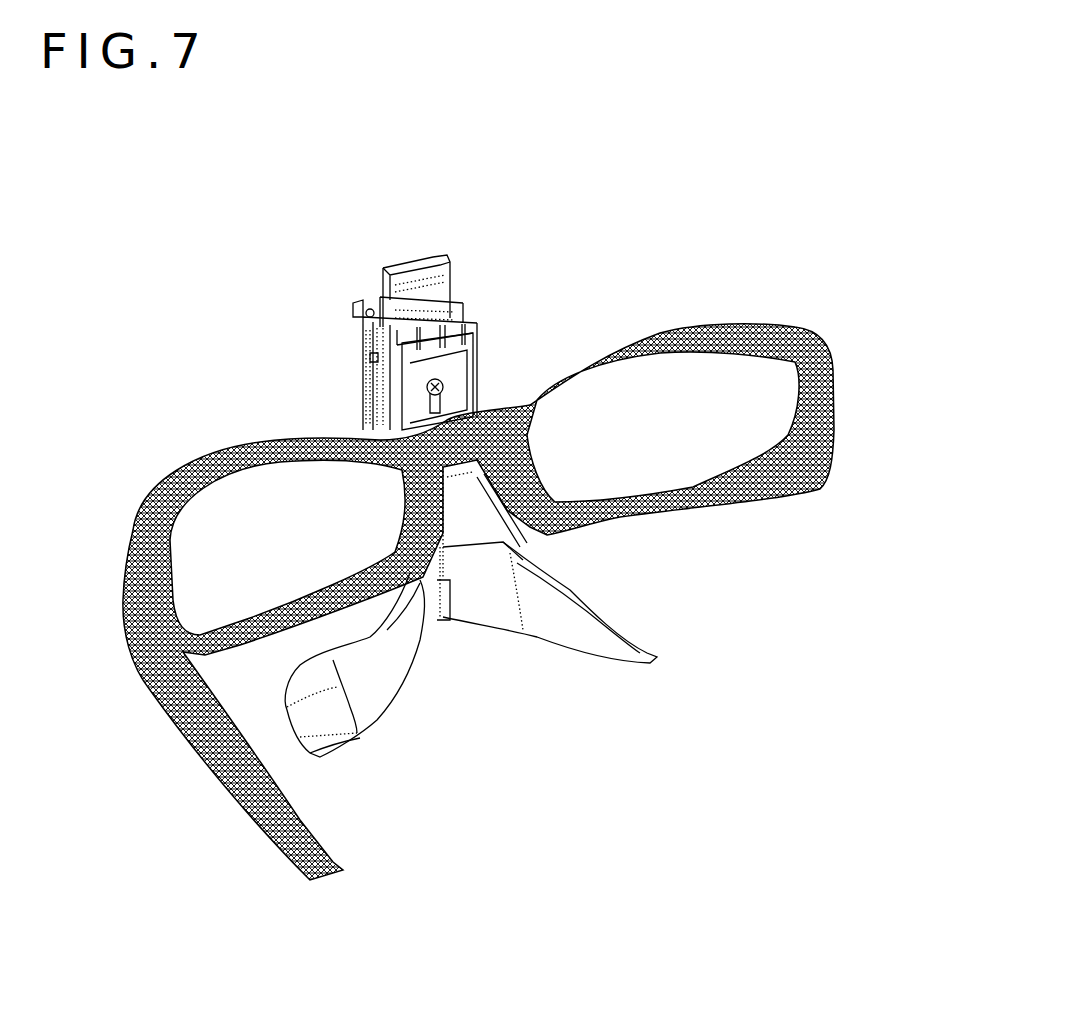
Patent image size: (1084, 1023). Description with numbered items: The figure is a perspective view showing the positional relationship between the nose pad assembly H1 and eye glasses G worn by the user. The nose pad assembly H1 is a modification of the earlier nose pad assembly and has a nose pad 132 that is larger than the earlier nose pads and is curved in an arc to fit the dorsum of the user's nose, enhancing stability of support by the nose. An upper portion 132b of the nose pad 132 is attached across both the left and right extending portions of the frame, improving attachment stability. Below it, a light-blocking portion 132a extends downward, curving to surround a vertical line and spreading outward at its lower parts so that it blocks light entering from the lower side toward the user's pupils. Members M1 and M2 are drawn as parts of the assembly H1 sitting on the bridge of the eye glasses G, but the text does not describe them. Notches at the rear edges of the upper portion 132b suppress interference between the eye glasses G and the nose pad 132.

The nose pad assembly H1 is at (434, 286).
The first member of display unit M1 is at (392, 268).
The second member (mounting unit) M2 is at (480, 330).
The eye glasses G is at (690, 330).
The nose pad 132 is at (500, 612).
The light-blocking portion 132a is at (606, 641).
The upper portion 132b is at (492, 537).